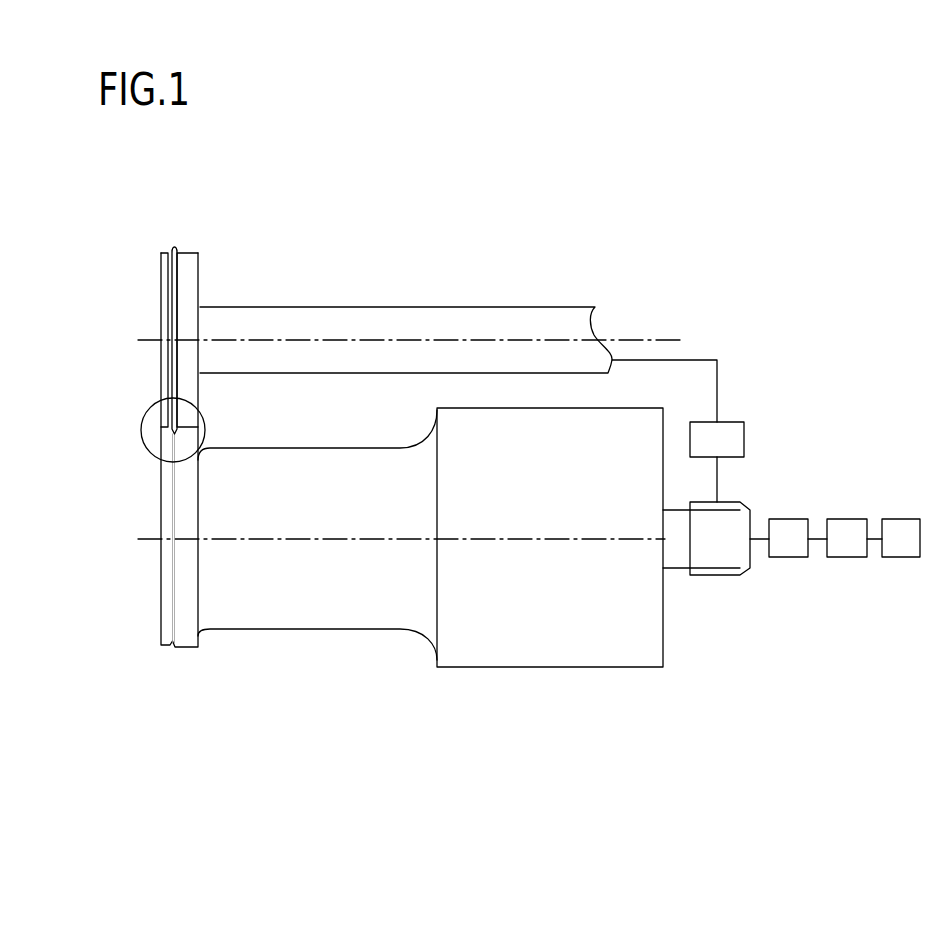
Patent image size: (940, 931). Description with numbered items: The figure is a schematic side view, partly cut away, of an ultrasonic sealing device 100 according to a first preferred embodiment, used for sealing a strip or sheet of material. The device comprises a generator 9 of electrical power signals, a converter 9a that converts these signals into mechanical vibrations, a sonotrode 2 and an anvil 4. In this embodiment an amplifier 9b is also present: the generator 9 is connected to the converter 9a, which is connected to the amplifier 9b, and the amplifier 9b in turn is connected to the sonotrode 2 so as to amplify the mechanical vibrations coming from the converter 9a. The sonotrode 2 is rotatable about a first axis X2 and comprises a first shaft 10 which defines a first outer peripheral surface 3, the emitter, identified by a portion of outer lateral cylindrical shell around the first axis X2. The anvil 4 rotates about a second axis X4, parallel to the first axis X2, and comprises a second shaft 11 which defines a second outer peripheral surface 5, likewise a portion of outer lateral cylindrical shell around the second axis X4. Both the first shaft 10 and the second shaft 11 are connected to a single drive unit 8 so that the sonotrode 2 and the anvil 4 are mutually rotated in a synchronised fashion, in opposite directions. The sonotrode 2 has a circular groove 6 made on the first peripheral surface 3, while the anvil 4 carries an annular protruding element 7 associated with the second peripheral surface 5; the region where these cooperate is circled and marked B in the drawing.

The ultrasonic sealing device 100 is at (572, 212).
The sonotrode 2 is at (186, 654).
The first outer peripheral surface 3 is at (162, 648).
The anvil 4 is at (190, 253).
The second outer peripheral surface 5 is at (165, 253).
The circular groove 6 is at (172, 646).
The protruding element 7 is at (173, 250).
The drive unit 8 is at (724, 449).
The generator 9 is at (908, 551).
The converter 9a is at (860, 551).
The amplifier 9b is at (802, 551).
The first shaft 10 is at (540, 635).
The second shaft 11 is at (470, 320).
The detail region B is at (143, 424).
The first axis X2 is at (150, 541).
The second axis X4 is at (298, 340).